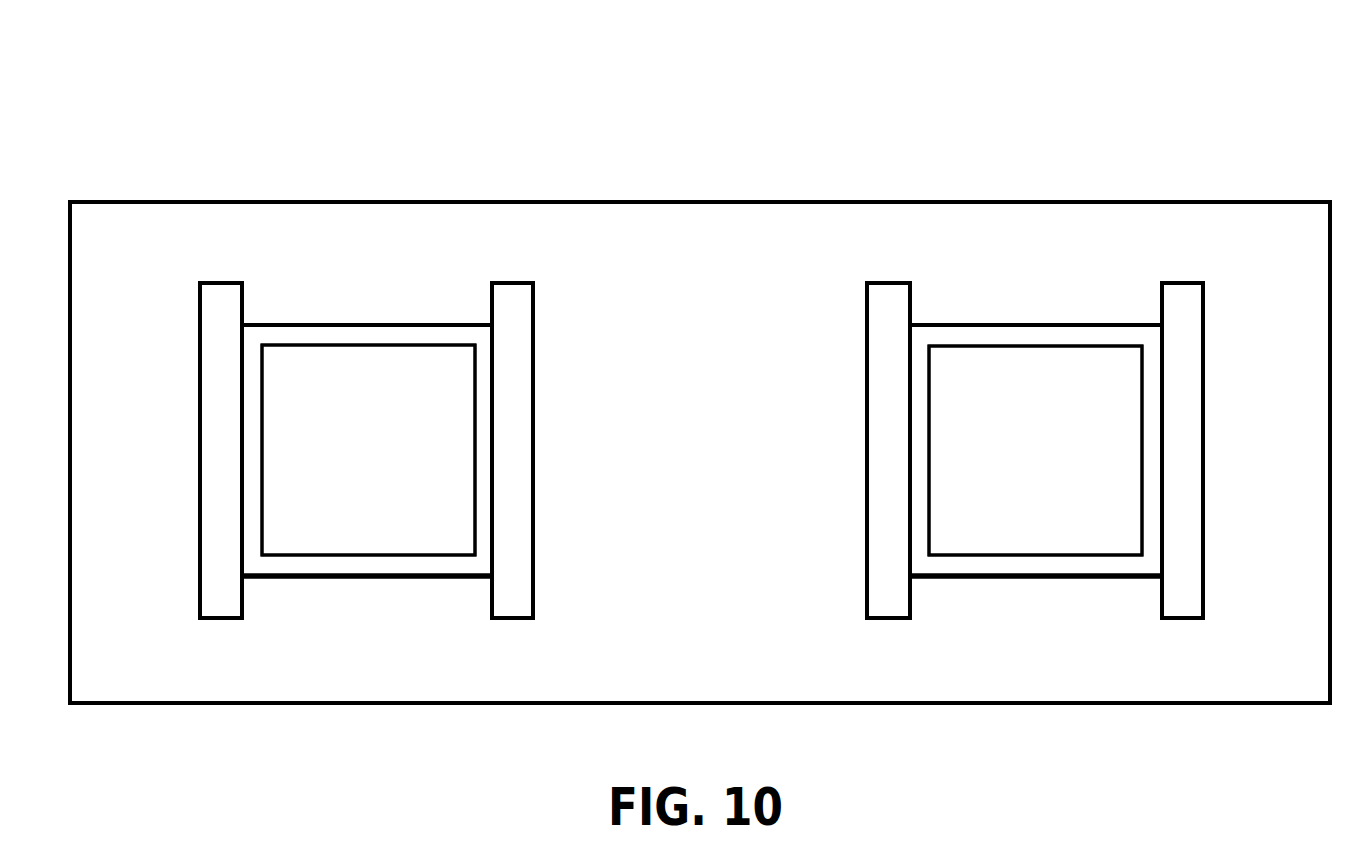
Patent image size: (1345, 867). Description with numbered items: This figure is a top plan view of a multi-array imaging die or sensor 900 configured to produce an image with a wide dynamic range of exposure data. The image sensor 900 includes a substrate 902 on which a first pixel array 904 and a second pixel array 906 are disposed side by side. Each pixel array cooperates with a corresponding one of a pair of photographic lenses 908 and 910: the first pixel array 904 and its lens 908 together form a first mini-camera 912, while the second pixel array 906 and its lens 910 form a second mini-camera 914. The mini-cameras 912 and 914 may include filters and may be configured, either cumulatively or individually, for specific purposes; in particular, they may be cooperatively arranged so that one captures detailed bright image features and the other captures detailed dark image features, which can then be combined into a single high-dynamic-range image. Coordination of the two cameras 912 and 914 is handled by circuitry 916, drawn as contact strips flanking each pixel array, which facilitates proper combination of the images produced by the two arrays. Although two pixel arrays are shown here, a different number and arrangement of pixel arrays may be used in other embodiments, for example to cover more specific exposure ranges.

The multi-array imaging die or sensor 900 is at (1062, 76).
The substrate 902 is at (688, 212).
The first pixel array 904 is at (400, 467).
The second pixel array 906 is at (1068, 467).
The photographic lens 908 is at (325, 578).
The photographic lens 910 is at (993, 578).
The first mini-camera 912 is at (304, 288).
The second mini-camera 914 is at (972, 290).
The circuitry 916 is at (507, 283).